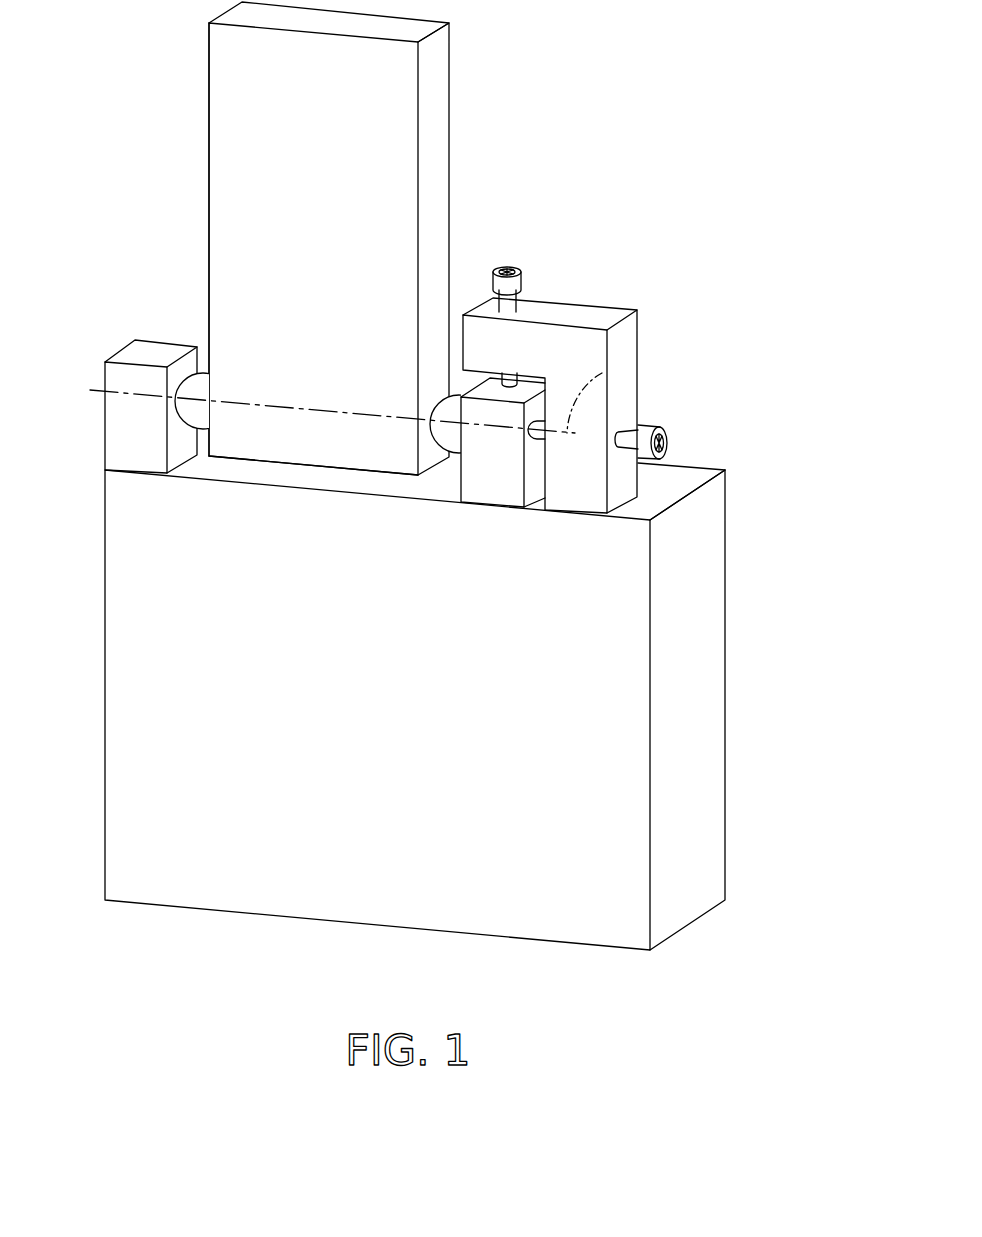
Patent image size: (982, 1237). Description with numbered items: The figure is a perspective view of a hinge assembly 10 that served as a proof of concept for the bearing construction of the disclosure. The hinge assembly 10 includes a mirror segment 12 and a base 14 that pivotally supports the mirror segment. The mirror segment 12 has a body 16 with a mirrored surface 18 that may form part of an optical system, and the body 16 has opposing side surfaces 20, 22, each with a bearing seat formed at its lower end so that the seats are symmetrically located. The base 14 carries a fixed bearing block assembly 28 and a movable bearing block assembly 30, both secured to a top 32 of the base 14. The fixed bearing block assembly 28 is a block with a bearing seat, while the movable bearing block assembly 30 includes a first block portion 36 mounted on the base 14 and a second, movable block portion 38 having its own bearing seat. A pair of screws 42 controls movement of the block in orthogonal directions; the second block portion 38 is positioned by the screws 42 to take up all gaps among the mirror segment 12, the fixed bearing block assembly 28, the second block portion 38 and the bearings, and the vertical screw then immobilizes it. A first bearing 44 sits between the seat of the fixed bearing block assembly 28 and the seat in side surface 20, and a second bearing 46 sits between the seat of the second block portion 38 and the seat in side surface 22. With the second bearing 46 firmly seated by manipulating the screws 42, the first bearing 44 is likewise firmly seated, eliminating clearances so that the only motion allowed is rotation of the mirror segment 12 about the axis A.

The hinge assembly 10 is at (562, 170).
The mirror segment 12 is at (337, 238).
The base 14 is at (440, 684).
The body 16 is at (347, 95).
The mirrored surface 18 is at (281, 230).
The side surface 20 is at (208, 150).
The side surface 22 is at (435, 128).
The fixed bearing block assembly 28 is at (130, 423).
The movable bearing block assembly 30 is at (593, 366).
The top 32 is at (687, 477).
The first block portion 36 is at (590, 307).
The second block portion 38 is at (503, 487).
The screw 42 is at (513, 263).
The first bearing 44 is at (194, 391).
The second bearing 46 is at (452, 440).
The axis A is at (602, 373).